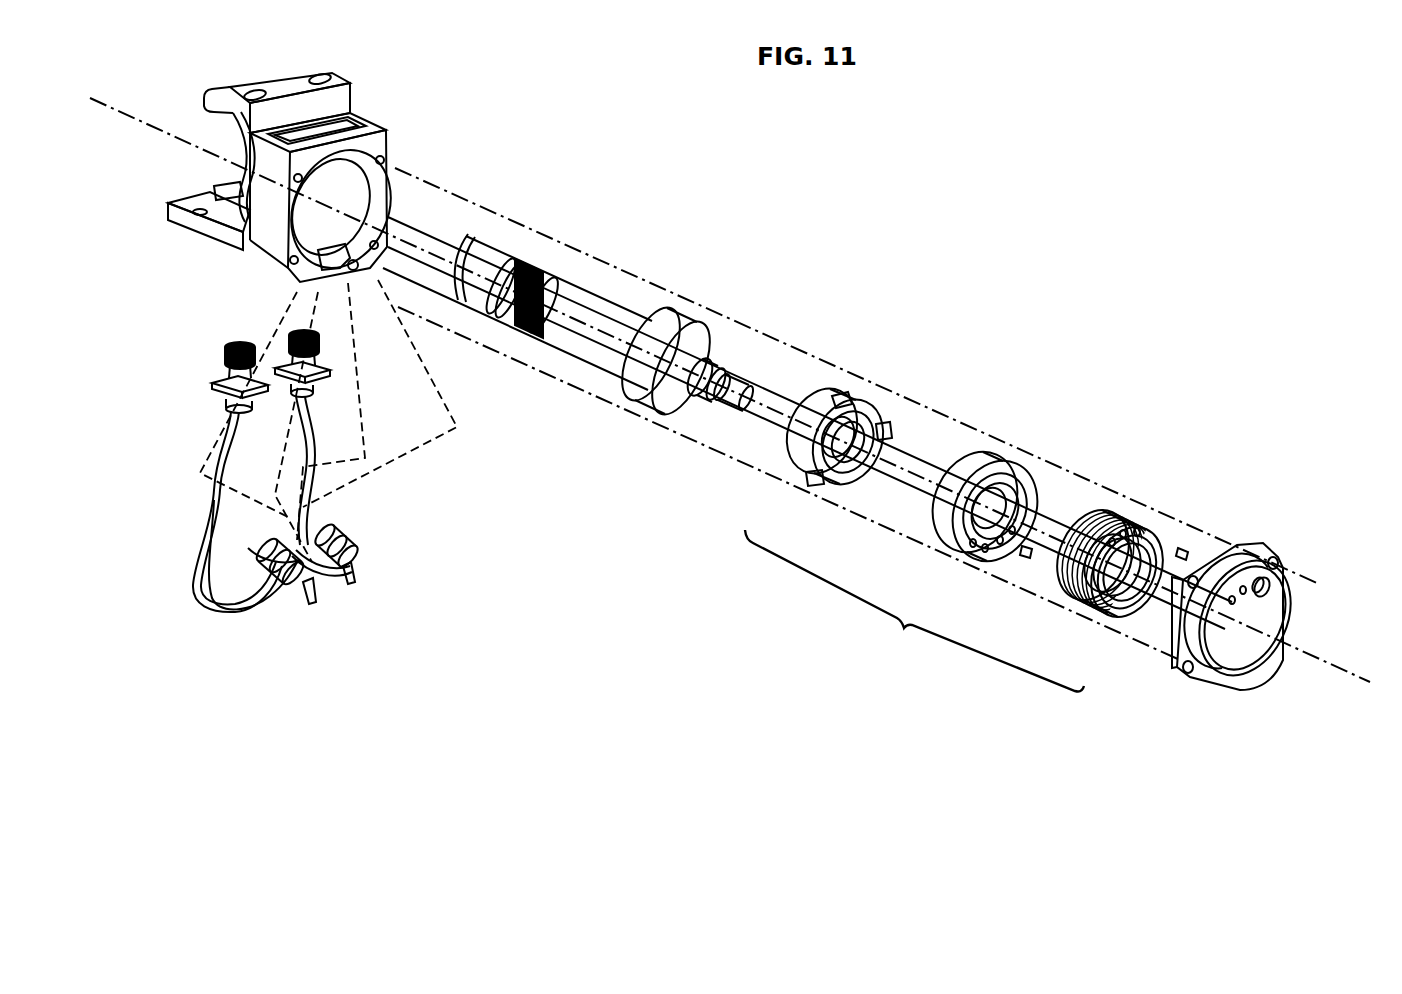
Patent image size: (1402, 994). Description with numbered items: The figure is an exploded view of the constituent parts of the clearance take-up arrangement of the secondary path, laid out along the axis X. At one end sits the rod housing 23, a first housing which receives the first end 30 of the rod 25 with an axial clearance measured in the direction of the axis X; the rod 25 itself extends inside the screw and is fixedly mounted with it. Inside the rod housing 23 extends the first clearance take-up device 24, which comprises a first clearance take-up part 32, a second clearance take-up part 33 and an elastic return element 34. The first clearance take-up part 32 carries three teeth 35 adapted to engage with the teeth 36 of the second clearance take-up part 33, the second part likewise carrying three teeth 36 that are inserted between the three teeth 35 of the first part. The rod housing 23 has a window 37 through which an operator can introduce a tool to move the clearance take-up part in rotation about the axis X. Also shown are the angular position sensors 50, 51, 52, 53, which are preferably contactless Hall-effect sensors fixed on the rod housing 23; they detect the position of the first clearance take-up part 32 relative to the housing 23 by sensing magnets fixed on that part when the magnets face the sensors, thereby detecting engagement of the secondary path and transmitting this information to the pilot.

The rod housing 23 is at (383, 145).
The first clearance take-up device 24 is at (914, 610).
The rod 25 is at (593, 303).
The first end 30 is at (688, 334).
The first clearance take-up part 32 is at (1040, 470).
The second clearance take-up part 33 is at (822, 402).
The elastic return element 34 is at (1122, 512).
The teeth 35 is at (975, 447).
The teeth 36 is at (840, 410).
The window 37 is at (347, 118).
The angular position sensor 50 is at (270, 547).
The angular position sensor 51 is at (300, 594).
The angular position sensor 52 is at (343, 563).
The angular position sensor 53 is at (330, 537).
The axis X is at (1352, 678).